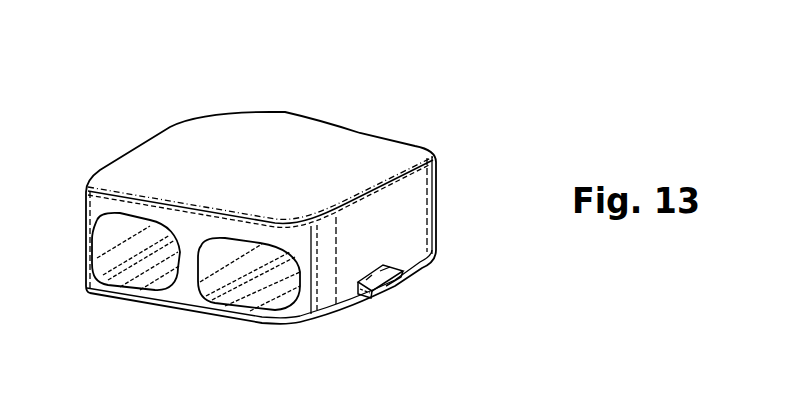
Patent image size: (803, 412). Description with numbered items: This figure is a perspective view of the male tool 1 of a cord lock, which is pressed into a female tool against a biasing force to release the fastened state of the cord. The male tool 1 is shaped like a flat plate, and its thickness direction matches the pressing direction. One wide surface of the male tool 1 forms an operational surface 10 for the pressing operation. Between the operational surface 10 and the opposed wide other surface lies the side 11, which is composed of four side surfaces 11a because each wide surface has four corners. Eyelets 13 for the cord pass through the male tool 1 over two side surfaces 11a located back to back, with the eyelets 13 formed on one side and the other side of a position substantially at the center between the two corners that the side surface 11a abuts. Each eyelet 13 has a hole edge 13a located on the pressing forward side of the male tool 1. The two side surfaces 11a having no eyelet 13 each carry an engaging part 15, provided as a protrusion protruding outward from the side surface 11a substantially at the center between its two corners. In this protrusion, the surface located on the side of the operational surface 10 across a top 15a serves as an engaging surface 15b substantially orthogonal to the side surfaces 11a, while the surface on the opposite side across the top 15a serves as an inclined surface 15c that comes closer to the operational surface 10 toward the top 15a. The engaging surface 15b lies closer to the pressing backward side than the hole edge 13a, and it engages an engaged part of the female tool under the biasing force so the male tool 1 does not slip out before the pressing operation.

The male tool 1 is at (293, 145).
The operational surface 10 is at (357, 143).
The side 11 is at (413, 202).
The side surface 11a is at (417, 230).
The eyelet 13 is at (240, 247).
The hole edge 13a is at (130, 293).
The engaging part 15 is at (393, 280).
The top 15a is at (380, 278).
The engaging surface 15b is at (412, 273).
The inclined surface 15c is at (383, 297).